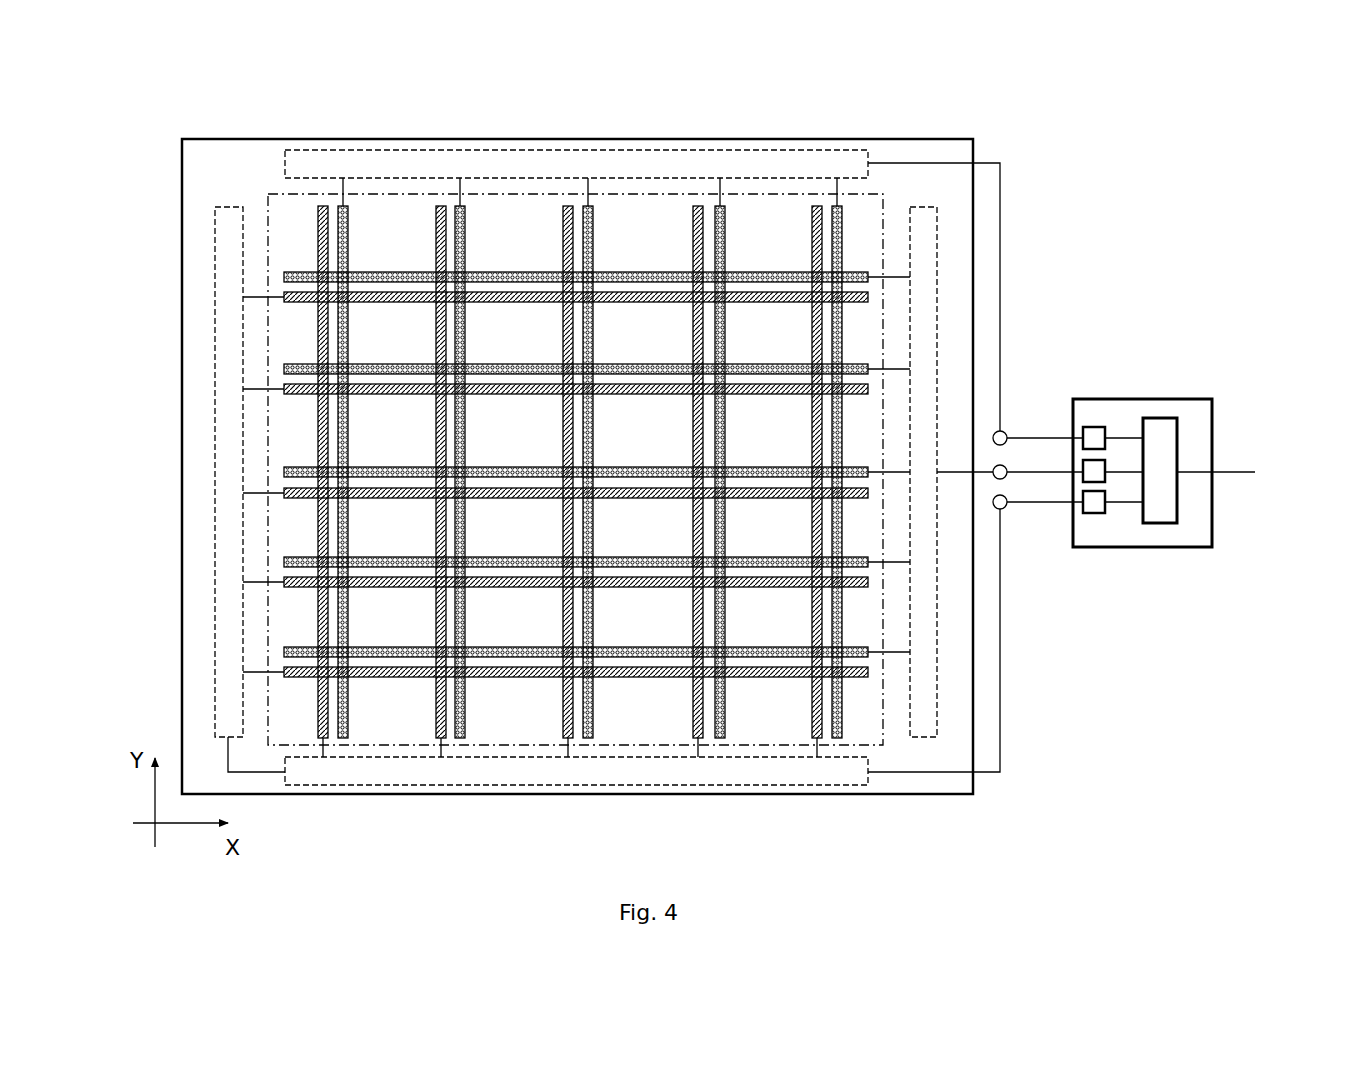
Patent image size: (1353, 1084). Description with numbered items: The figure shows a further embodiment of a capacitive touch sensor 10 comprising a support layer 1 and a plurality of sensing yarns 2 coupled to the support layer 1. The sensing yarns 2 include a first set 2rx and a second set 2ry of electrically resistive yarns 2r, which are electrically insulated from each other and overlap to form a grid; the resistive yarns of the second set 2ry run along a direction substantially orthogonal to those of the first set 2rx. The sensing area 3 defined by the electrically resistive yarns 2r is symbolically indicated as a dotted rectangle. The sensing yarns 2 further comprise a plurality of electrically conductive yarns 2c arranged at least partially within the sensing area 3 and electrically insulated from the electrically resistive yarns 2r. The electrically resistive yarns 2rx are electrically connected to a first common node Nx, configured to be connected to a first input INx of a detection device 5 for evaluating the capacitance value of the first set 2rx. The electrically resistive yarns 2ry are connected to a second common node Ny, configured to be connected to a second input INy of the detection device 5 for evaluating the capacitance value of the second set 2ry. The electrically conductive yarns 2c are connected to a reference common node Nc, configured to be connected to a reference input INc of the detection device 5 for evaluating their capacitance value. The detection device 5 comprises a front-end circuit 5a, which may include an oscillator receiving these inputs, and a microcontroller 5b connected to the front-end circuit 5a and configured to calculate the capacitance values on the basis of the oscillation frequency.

The support layer 1 is at (206, 167).
The capacitive touch sensor 10 is at (1126, 153).
The sensing yarns 2 is at (491, 524).
The first set of electrically resistive yarns 2rx is at (270, 367).
The electrically conductive yarns 2c is at (683, 676).
The second set of electrically resistive yarns 2ry is at (720, 748).
The electrically resistive yarns 2r is at (329, 545).
The sensing area 3 is at (683, 192).
The detection device 5 is at (1174, 503).
The front-end circuit 5a is at (1095, 420).
The microcontroller 5b is at (1158, 514).
The first common node Nx is at (933, 257).
The second common node Ny is at (542, 159).
The reference common node Nc is at (223, 637).
The first input INx is at (1007, 476).
The second input INy is at (1000, 431).
The reference input INc is at (1003, 510).